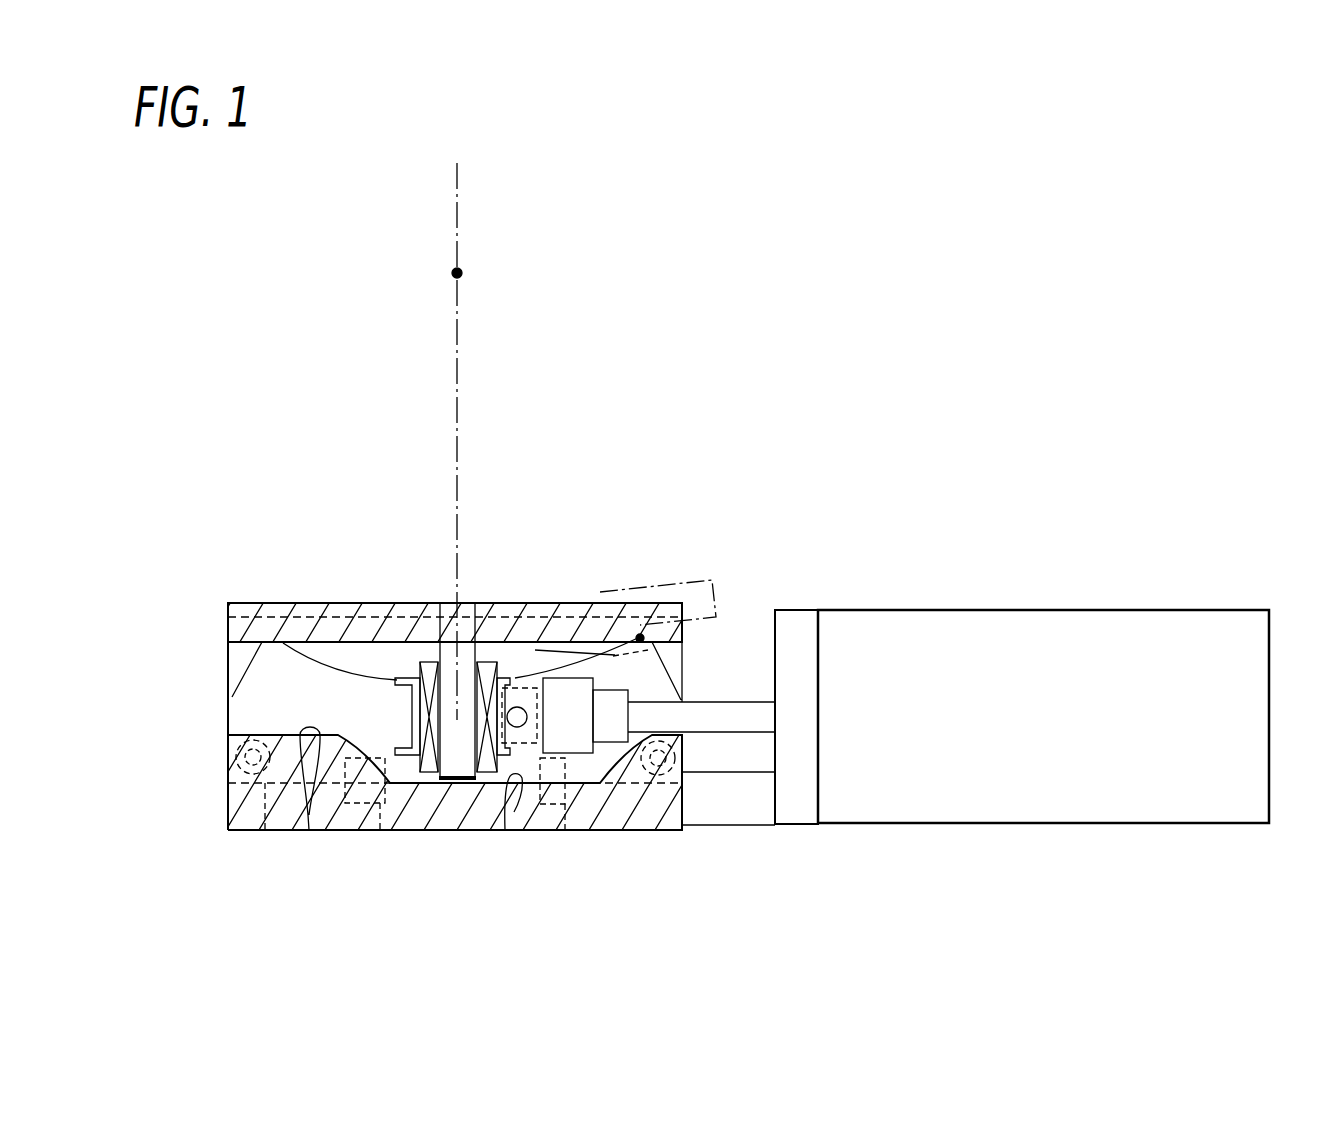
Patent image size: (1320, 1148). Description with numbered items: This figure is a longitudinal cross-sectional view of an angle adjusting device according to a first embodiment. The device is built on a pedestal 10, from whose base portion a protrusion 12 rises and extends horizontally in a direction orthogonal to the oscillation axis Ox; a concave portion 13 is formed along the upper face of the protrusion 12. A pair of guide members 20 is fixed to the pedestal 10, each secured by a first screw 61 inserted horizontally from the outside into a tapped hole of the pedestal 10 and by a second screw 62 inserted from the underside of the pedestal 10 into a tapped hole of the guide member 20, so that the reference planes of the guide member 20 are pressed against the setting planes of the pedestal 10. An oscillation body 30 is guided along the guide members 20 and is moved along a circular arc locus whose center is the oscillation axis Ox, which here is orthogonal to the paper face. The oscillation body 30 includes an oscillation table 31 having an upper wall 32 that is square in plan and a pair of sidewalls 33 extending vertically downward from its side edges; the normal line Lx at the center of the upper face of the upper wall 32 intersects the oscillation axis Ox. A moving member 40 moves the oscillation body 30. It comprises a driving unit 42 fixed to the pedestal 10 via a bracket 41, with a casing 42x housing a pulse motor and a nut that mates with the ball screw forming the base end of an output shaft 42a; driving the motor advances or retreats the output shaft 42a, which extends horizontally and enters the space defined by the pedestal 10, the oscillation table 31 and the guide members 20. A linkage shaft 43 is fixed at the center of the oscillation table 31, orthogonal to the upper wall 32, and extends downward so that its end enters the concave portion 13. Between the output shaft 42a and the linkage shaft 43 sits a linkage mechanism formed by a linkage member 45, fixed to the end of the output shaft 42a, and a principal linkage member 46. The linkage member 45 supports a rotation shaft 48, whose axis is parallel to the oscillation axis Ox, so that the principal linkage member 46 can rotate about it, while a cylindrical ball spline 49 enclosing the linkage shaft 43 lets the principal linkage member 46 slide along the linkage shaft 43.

The pedestal 10 is at (223, 770).
The protrusion 12 is at (308, 830).
The concave portion 13 is at (505, 830).
The guide member 20 is at (235, 690).
The oscillation body 30 is at (397, 598).
The oscillation table 31 is at (292, 603).
The upper wall 32 is at (257, 603).
The sidewall 33 is at (237, 653).
The moving member 40 is at (793, 606).
The bracket 41 is at (738, 810).
The driving unit 42 is at (1055, 610).
The output shaft 42a is at (723, 712).
The casing 42x is at (943, 618).
The linkage shaft 43 is at (472, 602).
The linkage member 45 is at (573, 740).
The principal linkage member 46 is at (519, 686).
The rotation shaft 48 is at (527, 717).
The cylindrical ball spline 49 is at (420, 603).
The first screw 61 is at (263, 833).
The second screw 62 is at (379, 833).
The oscillation axis Ox is at (462, 272).
The normal line Lx is at (459, 393).